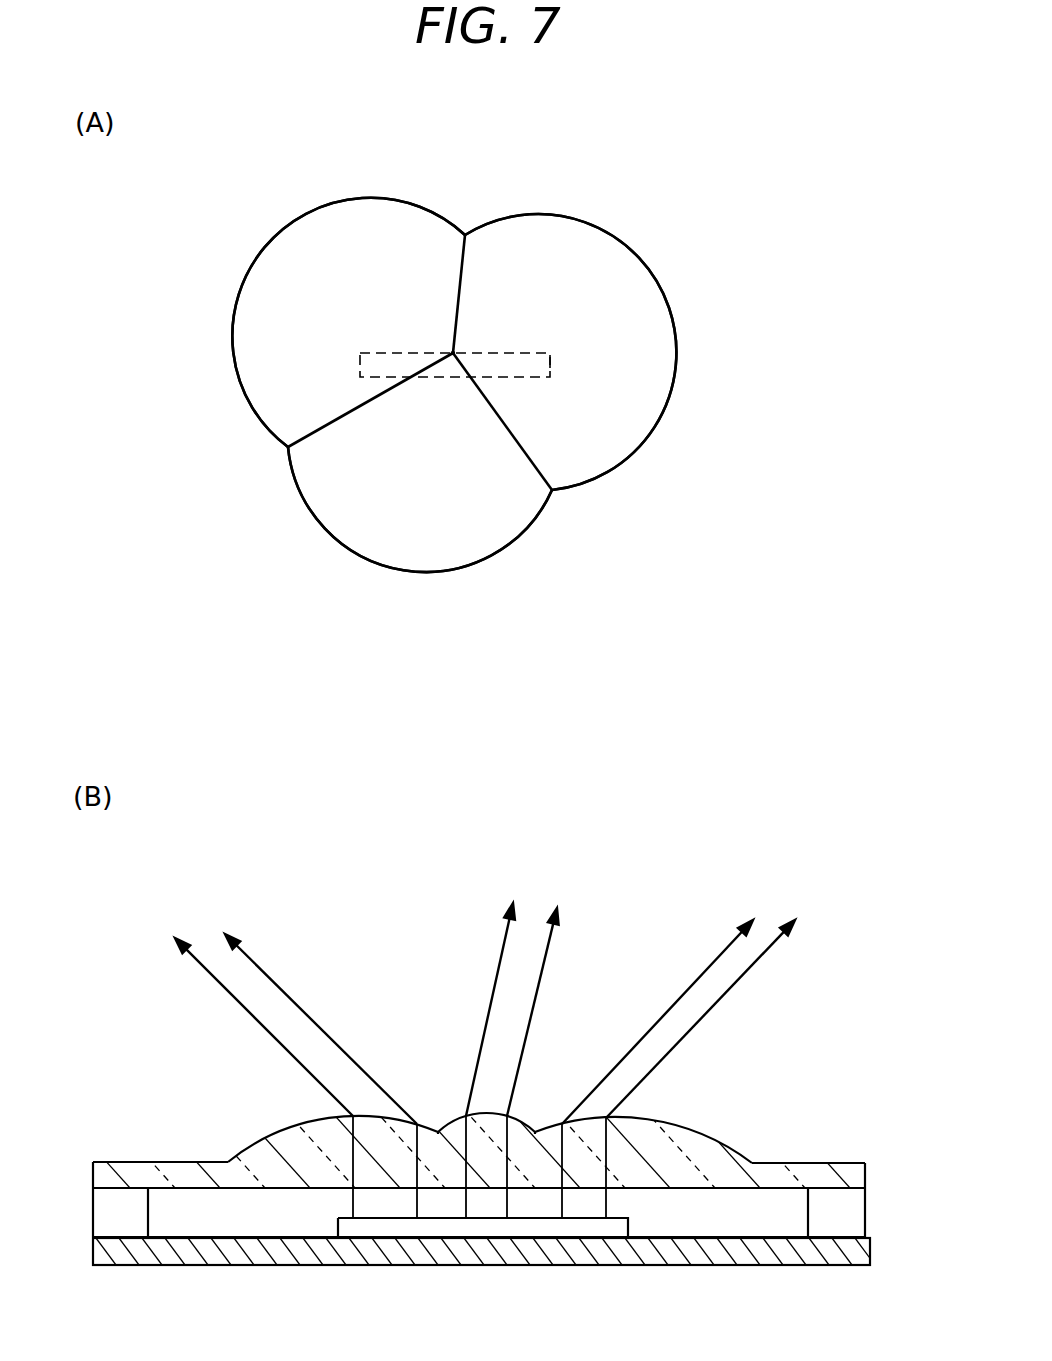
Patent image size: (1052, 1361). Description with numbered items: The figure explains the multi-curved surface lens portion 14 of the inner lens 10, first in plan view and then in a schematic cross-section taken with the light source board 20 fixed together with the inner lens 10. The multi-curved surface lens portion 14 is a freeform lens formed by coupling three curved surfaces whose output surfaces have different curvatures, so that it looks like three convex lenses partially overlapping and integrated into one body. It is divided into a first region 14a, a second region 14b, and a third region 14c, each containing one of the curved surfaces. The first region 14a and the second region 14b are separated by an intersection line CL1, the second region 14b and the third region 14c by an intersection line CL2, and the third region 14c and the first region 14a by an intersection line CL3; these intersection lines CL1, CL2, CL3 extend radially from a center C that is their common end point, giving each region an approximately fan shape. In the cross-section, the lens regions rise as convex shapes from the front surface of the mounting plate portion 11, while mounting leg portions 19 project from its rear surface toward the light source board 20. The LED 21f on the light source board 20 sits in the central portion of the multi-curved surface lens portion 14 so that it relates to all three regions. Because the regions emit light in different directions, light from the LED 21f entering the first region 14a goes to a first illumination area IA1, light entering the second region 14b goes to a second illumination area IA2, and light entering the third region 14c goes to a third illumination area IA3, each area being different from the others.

The inner lens 10 is at (802, 1144).
The mounting plate portion 11 is at (838, 1169).
The multi-curved surface lens portion 14 is at (712, 208).
The first region 14a is at (280, 302).
The second region 14b is at (458, 540).
The third region 14c is at (645, 390).
The mounting leg portion 19 is at (113, 1214).
The light source board 20 is at (843, 1252).
The LED 21f is at (553, 362).
The center C is at (453, 353).
The intersection line CL1 is at (348, 413).
The intersection line CL2 is at (537, 465).
The intersection line CL3 is at (463, 280).
The first illumination area IA1 is at (240, 925).
The second illumination area IA2 is at (595, 900).
The third illumination area IA3 is at (840, 910).